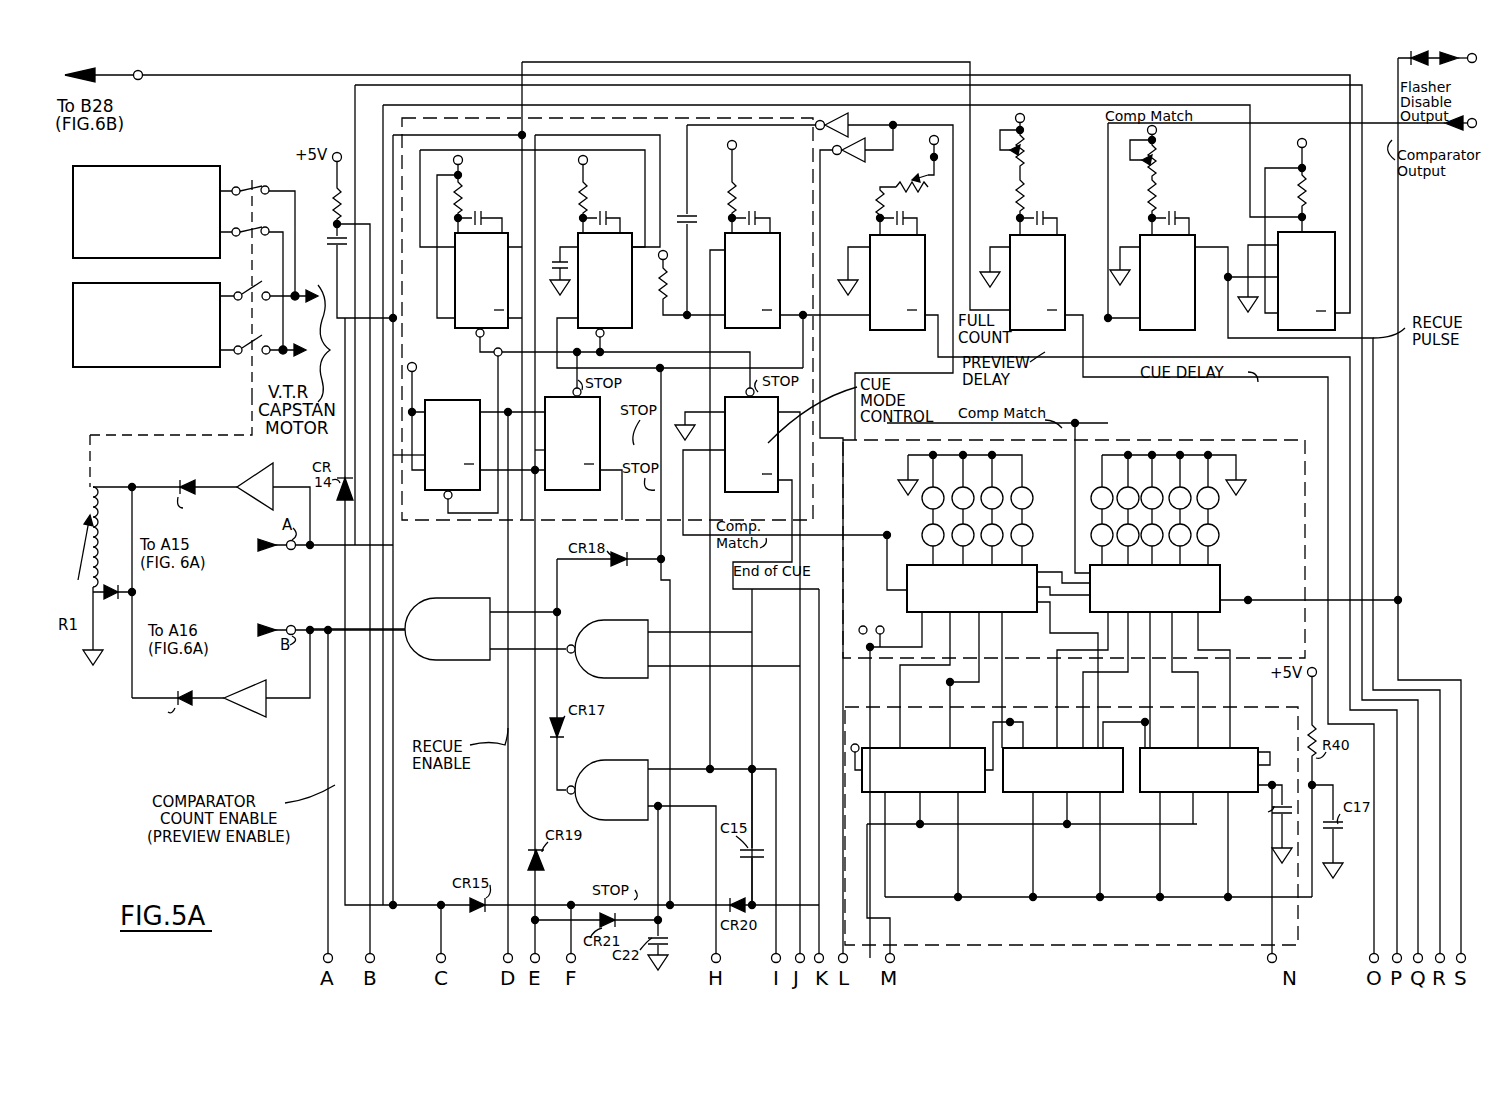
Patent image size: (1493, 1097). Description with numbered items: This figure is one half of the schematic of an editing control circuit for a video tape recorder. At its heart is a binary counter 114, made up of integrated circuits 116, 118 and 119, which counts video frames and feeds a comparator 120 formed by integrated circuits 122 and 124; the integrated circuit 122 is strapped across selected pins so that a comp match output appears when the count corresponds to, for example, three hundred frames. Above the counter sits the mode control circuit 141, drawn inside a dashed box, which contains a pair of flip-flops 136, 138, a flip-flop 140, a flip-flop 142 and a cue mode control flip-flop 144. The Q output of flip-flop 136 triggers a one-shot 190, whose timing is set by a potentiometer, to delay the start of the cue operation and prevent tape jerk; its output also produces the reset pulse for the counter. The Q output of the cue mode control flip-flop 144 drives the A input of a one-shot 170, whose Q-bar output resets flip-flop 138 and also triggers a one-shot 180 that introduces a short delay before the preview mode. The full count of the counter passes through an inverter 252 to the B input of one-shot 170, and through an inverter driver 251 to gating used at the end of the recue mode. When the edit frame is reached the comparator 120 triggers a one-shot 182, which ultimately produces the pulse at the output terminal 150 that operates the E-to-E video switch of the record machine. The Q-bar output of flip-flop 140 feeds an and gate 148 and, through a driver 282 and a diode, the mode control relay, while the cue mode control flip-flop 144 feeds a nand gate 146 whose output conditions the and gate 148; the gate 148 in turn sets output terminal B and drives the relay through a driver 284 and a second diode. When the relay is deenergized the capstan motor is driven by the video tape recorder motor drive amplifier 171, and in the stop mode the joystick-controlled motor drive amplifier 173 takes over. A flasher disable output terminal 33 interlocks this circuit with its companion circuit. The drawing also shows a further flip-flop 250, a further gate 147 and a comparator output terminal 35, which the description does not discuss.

The output terminal 150 is at (142, 72).
The video tape recorder motor drive amplifier 171 is at (122, 166).
The motor drive amplifier 173 is at (118, 367).
The mode control circuit 141 is at (597, 128).
The flip-flop 136 is at (468, 330).
The flip-flop 138 is at (618, 330).
The flip-flop 140 is at (600, 430).
The flip-flop 142 is at (470, 380).
The cue mode control flip-flop 144 is at (732, 395).
The one-shot 170 is at (765, 330).
The one-shot 180 is at (897, 330).
The one-shot 190 is at (1065, 290).
The one-shot 182 is at (1175, 330).
The JK flip-flop 250 is at (1312, 232).
The inverter 252 is at (833, 140).
The inverter driver 251 is at (845, 162).
The and gate 148 is at (455, 598).
The nand gate 146 is at (620, 620).
The NAND gate 147 is at (620, 760).
The driver 282 is at (258, 478).
The driver 284 is at (255, 710).
The comparator 120 is at (1058, 473).
The integrated circuit 122 is at (905, 590).
The integrated circuit 124 is at (1212, 575).
The binary counter 114 is at (1130, 812).
The integrated circuit 116 is at (908, 783).
The integrated circuit 118 is at (1058, 783).
The integrated circuit 119 is at (1188, 783).
The flasher disable output terminal 33 is at (1420, 68).
The comparator output 35 is at (1464, 137).